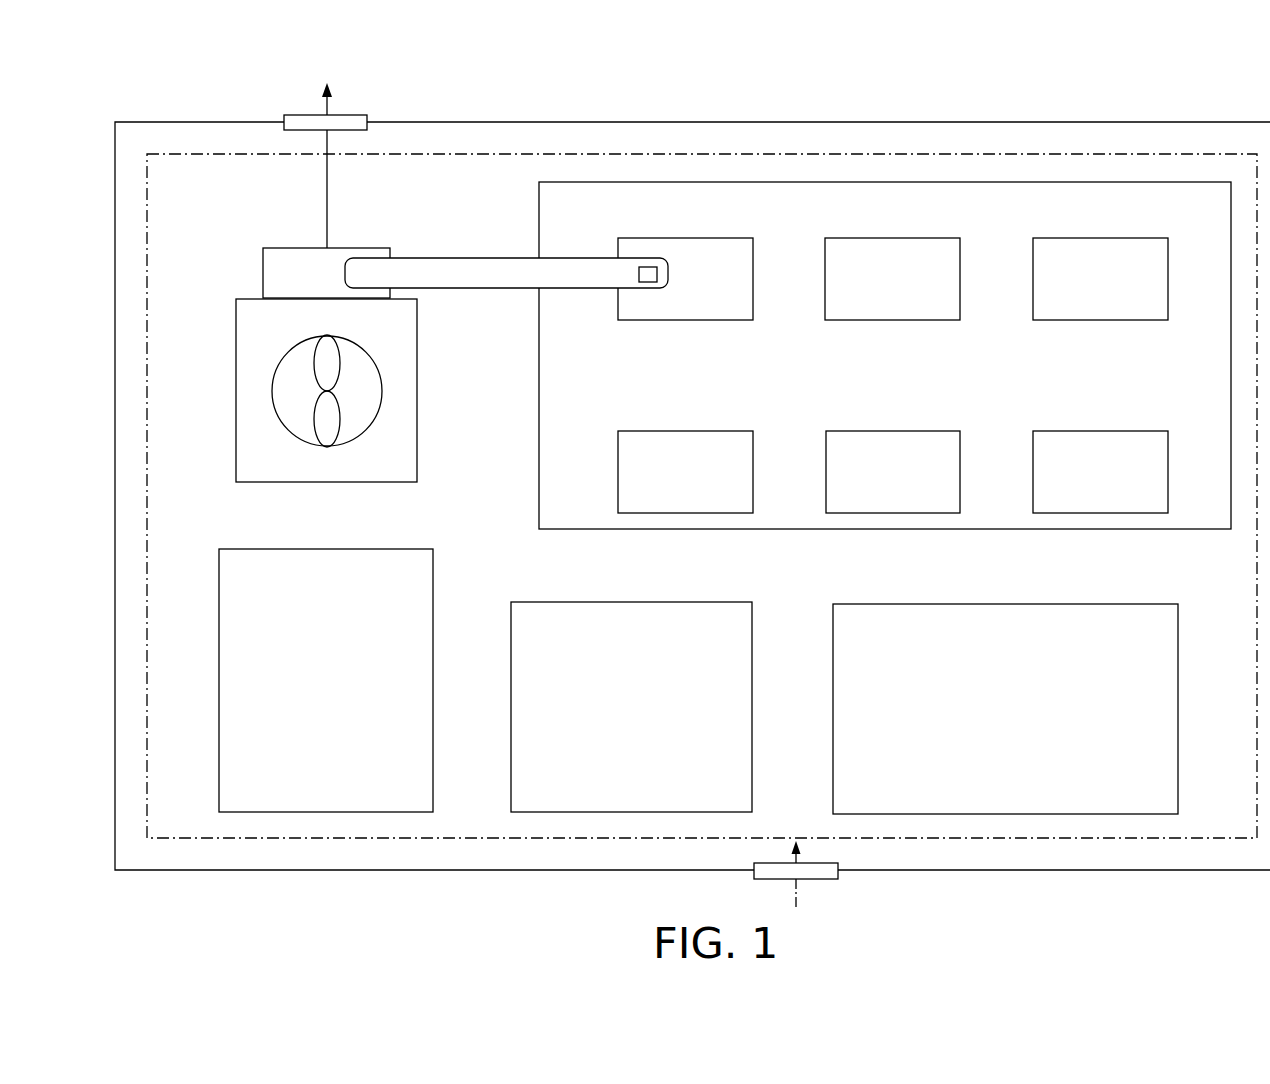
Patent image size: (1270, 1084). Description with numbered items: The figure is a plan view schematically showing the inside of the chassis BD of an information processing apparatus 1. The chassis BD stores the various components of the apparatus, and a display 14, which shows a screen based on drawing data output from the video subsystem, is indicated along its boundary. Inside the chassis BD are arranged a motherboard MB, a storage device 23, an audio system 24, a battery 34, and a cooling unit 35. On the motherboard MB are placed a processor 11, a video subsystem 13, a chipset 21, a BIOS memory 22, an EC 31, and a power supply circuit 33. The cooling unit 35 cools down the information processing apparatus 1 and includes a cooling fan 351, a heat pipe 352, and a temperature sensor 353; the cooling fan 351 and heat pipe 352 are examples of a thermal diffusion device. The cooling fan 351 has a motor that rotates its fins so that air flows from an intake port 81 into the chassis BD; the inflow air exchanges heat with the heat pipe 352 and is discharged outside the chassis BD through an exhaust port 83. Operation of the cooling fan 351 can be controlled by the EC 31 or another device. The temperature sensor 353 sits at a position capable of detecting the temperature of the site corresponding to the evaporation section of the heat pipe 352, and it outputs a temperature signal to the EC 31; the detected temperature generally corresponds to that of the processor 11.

The information processing apparatus 1 is at (923, 94).
The chassis BD is at (1228, 122).
The display 14 is at (1115, 152).
The motherboard MB is at (539, 210).
The processor 11 is at (697, 238).
The video subsystem 13 is at (906, 238).
The chipset 21 is at (1112, 238).
The BIOS memory 22 is at (697, 431).
The EC 31 is at (904, 431).
The power supply circuit 33 is at (1115, 431).
The storage device 23 is at (695, 602).
The audio system 24 is at (376, 549).
The battery 34 is at (1120, 604).
The cooling unit 35 is at (422, 349).
The cooling fan 351 is at (382, 390).
The heat pipe 352 is at (352, 247).
The temperature sensor 353 is at (648, 283).
The exhaust port 83 is at (349, 114).
The intake port 81 is at (813, 880).